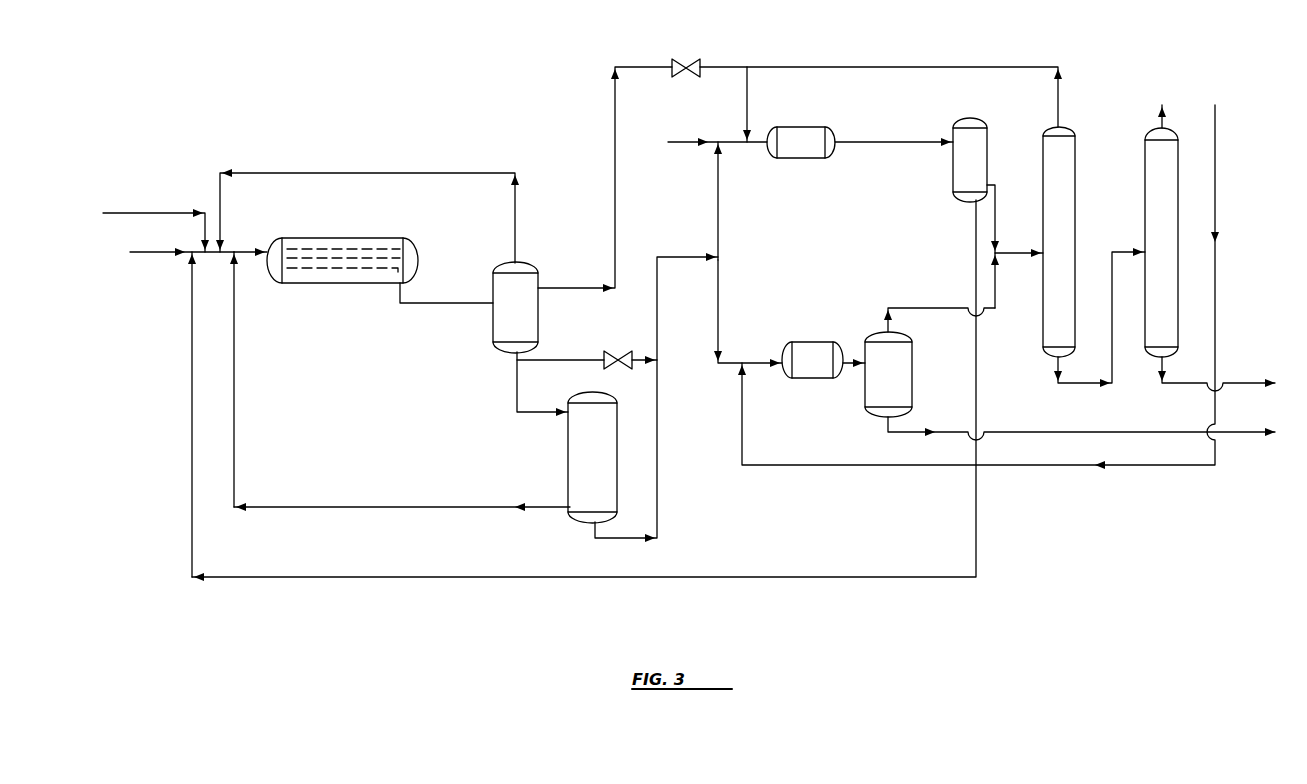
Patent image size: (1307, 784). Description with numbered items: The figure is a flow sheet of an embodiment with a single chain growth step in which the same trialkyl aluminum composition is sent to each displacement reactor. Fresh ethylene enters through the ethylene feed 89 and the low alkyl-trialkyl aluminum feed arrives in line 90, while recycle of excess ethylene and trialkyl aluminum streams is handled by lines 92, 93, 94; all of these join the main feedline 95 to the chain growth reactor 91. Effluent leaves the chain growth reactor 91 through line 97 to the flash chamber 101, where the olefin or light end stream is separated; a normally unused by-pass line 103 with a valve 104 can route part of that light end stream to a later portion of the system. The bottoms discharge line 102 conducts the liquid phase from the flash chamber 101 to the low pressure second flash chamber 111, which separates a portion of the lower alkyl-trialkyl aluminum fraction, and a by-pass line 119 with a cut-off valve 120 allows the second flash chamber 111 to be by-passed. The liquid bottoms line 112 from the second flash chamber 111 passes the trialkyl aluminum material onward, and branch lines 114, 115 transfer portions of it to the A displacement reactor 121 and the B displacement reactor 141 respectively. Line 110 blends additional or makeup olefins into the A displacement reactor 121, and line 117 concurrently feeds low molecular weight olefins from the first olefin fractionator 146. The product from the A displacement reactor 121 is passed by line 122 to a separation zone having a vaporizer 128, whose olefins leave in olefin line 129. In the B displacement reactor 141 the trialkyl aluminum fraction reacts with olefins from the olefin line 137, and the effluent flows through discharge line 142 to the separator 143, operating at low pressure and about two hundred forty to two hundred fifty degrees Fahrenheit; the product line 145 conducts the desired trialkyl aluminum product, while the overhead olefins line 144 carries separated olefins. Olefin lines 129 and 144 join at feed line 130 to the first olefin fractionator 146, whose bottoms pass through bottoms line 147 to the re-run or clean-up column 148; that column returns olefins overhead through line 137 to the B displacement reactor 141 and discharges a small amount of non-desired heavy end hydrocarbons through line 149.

The ethylene feed 89 is at (175, 253).
The low alkyl-trialkyl aluminum feed line 90 is at (205, 213).
The chain growth reactor 91 is at (300, 283).
The recycle line 92 is at (192, 322).
The recycle line 93 is at (355, 173).
The recycle line 94 is at (234, 322).
The main feedline 95 is at (242, 252).
The effluent line 97 is at (398, 303).
The flash chamber 101 is at (529, 309).
The bottoms discharge line 102 is at (517, 386).
The by-pass line 103 is at (615, 127).
The valve 104 is at (690, 60).
The input line 110 is at (687, 142).
The second flash chamber 111 is at (568, 450).
The liquid bottoms line 112 is at (608, 538).
The branch line 114 is at (718, 198).
The branch line 115 is at (718, 292).
The overhead line 117 is at (872, 67).
The by-pass line 119 is at (540, 360).
The cut-off valve 120 is at (618, 351).
The A displacement reactor 121 is at (815, 151).
The product line 122 is at (862, 142).
The vaporizer 128 is at (953, 163).
The olefin line 129 is at (995, 210).
The feed line 130 is at (1002, 253).
The olefin line 137 is at (742, 425).
The B displacement reactor 141 is at (826, 369).
The discharge line 142 is at (855, 360).
The separator 143 is at (903, 383).
The overhead olefins line 144 is at (900, 308).
The product line 145 is at (1053, 432).
The first olefin fractionator 146 is at (1075, 214).
The bottoms line 147 is at (1066, 383).
The clean-up column 148 is at (1145, 180).
The heavy ends line 149 is at (1232, 383).